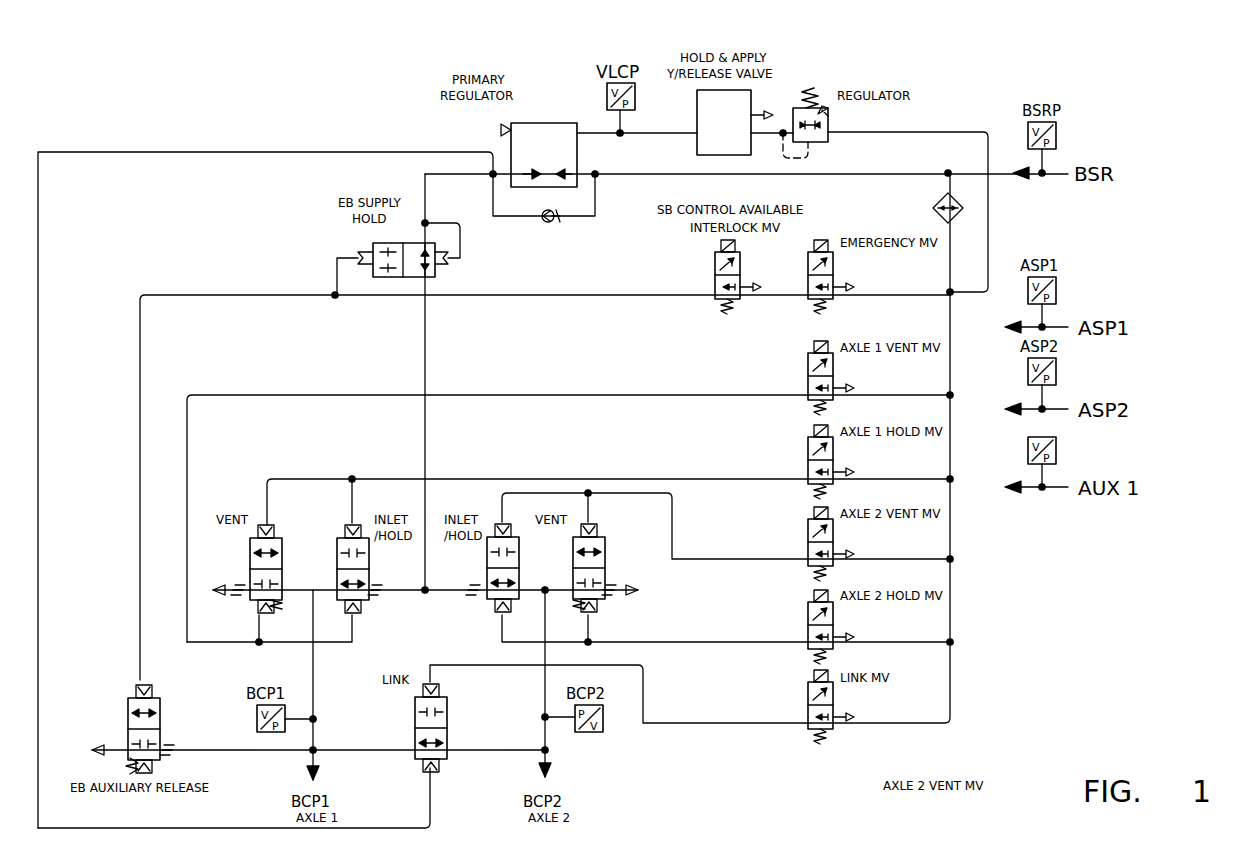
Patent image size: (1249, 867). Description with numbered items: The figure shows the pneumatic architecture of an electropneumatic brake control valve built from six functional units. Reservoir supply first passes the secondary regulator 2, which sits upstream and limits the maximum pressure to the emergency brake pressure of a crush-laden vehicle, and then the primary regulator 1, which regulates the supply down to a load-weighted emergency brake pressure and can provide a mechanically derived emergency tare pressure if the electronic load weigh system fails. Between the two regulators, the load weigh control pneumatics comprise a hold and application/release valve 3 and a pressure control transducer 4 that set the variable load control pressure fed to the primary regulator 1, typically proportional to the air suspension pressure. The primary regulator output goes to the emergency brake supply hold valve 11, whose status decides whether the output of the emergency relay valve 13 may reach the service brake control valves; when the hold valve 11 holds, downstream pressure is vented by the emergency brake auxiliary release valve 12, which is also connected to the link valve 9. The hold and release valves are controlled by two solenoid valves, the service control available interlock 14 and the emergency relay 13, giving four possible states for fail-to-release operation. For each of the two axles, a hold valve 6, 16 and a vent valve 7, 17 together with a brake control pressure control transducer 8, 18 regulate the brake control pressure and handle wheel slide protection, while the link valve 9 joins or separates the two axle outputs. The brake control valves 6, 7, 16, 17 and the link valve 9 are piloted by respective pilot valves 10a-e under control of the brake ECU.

The primary regulator 1 is at (545, 122).
The secondary regulator 2 is at (813, 82).
The hold & application/release valve 3 is at (725, 43).
The pressure control transducer 4 is at (618, 56).
The hold valve 6 is at (249, 556).
The vent valve 7 is at (336, 548).
The brake control pressure control transducer 8 is at (256, 718).
The link valve 9 is at (446, 707).
The pilot valves 10a-e is at (845, 735).
The emergency brake supply hold valve 11 is at (358, 258).
The emergency brake auxiliary release valve 12 is at (127, 708).
The emergency relay valve 13 is at (823, 240).
The service control available interlock 14 is at (713, 262).
The hold valve 16 is at (500, 520).
The vent valve 17 is at (597, 542).
The brake control pressure control transducer 18 is at (592, 733).